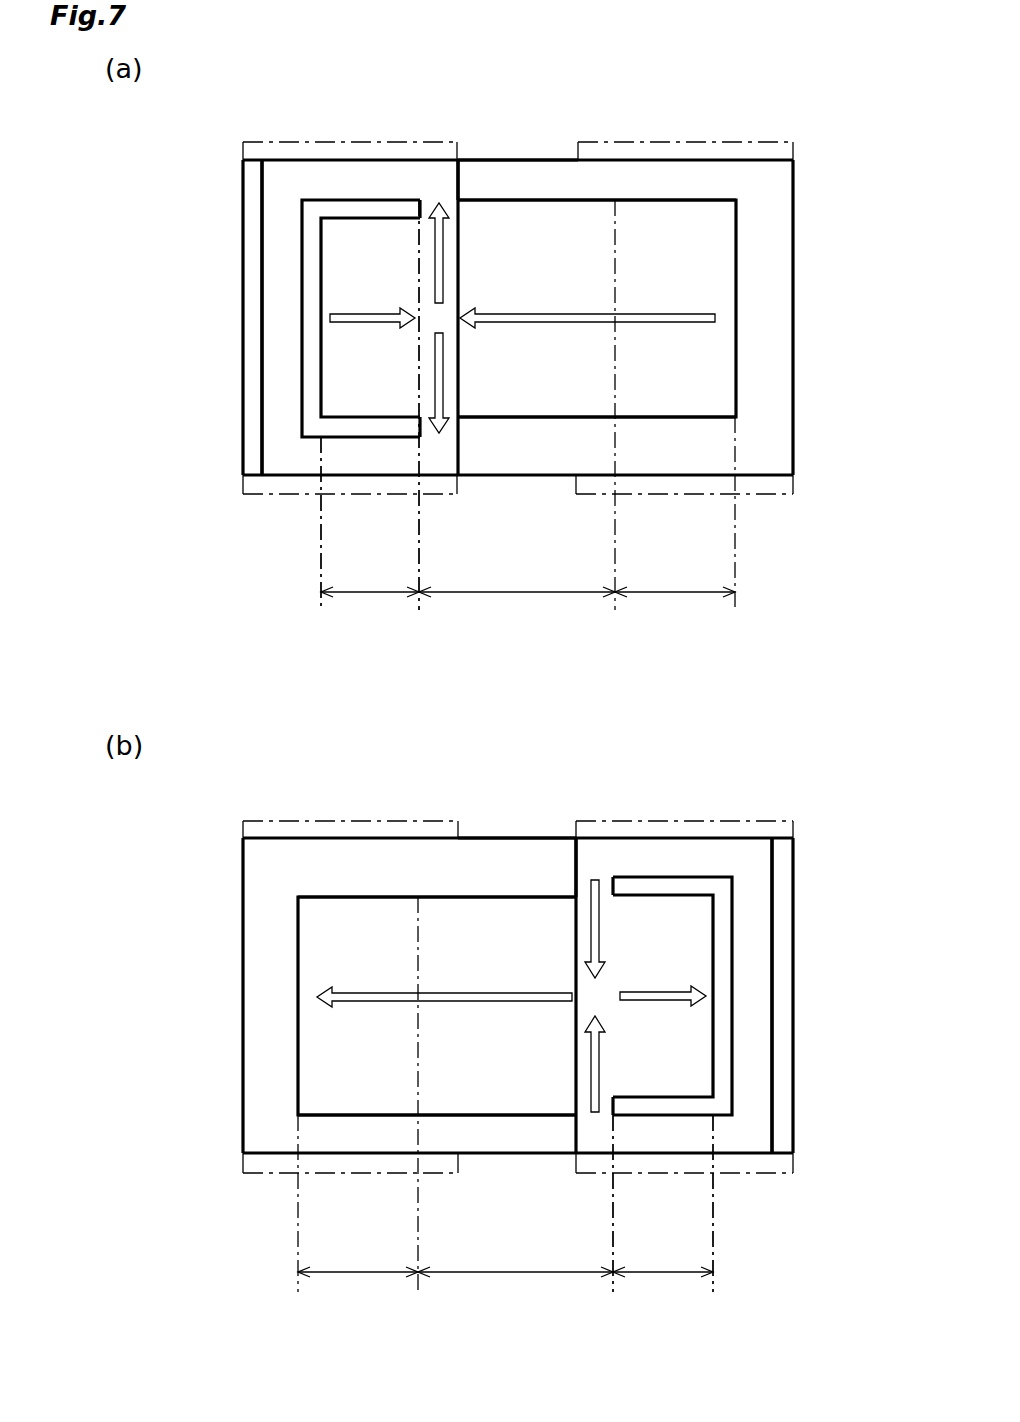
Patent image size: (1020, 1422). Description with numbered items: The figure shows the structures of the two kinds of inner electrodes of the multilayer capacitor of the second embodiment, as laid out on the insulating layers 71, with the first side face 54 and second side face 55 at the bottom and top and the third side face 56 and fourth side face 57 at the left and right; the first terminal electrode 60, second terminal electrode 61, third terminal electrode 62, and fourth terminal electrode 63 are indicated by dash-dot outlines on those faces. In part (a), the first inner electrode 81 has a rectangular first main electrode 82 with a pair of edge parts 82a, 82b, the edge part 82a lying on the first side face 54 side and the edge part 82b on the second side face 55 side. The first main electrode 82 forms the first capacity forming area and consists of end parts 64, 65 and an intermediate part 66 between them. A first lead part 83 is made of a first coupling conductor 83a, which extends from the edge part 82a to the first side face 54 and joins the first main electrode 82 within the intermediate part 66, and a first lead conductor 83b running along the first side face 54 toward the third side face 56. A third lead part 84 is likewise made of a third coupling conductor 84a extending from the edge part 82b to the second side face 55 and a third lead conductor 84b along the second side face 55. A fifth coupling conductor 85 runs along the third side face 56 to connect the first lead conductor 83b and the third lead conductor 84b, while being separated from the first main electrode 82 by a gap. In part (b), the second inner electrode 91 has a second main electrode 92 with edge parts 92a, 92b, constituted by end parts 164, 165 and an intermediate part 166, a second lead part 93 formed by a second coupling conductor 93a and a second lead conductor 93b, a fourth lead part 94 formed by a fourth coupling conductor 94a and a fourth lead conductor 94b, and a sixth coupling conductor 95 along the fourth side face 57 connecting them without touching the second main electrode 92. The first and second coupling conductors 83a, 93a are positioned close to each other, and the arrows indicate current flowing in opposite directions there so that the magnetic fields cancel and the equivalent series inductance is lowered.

The first side face 54 is at (687, 478).
The second side face 55 is at (748, 158).
The third side face 56 is at (242, 340).
The fourth side face 57 is at (795, 335).
The first terminal electrode 60 is at (367, 497).
The second terminal electrode 61 is at (652, 497).
The third terminal electrode 62 is at (325, 140).
The fourth terminal electrode 63 is at (687, 140).
The end part 64 is at (370, 596).
The end part 65 is at (680, 596).
The intermediate part 66 is at (520, 596).
The insulating layer 71 is at (533, 172).
The first inner electrode 81 is at (463, 176).
The first main electrode 82 is at (708, 257).
The edge part 82a is at (527, 420).
The edge part 82b is at (555, 198).
The first lead part 83 is at (370, 405).
The first coupling conductor 83a is at (443, 457).
The first lead conductor 83b is at (280, 457).
The third lead part 84 is at (384, 271).
The third coupling conductor 84a is at (437, 175).
The third lead conductor 84b is at (308, 178).
The fifth coupling conductor 85 is at (272, 292).
The second inner electrode 91 is at (569, 850).
The second main electrode 92 is at (326, 937).
The edge part 92a is at (503, 1118).
The edge part 92b is at (478, 895).
The second lead part 93 is at (663, 1203).
The second coupling conductor 93a is at (590, 1135).
The second lead conductor 93b is at (752, 1135).
The fourth lead part 94 is at (694, 948).
The fourth coupling conductor 94a is at (597, 853).
The fourth lead conductor 94b is at (725, 855).
The sixth coupling conductor 95 is at (758, 972).
The end part 164 is at (355, 1277).
The end part 165 is at (663, 1277).
The intermediate part 166 is at (517, 1277).